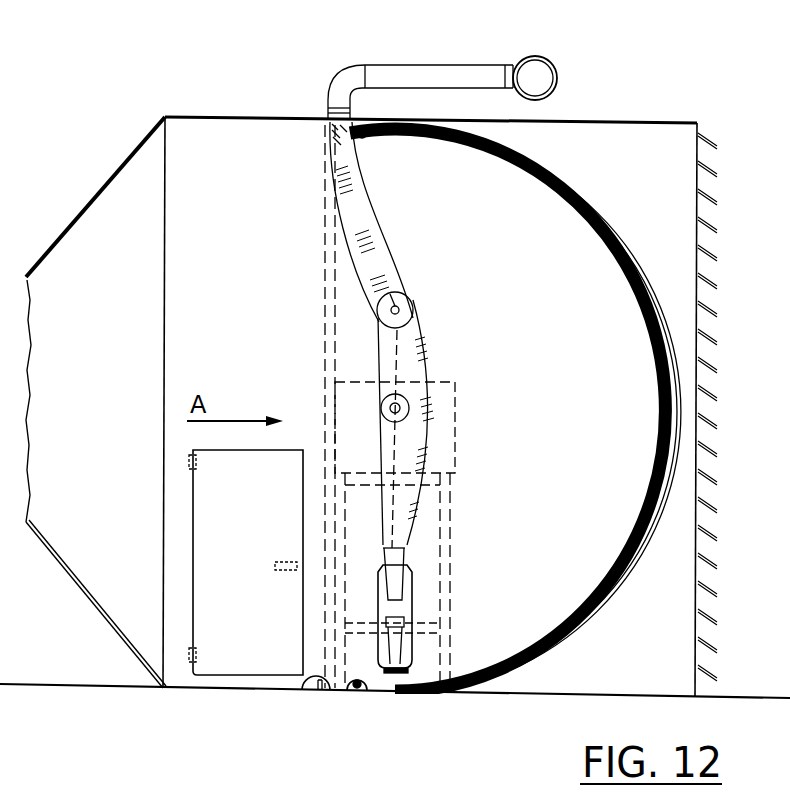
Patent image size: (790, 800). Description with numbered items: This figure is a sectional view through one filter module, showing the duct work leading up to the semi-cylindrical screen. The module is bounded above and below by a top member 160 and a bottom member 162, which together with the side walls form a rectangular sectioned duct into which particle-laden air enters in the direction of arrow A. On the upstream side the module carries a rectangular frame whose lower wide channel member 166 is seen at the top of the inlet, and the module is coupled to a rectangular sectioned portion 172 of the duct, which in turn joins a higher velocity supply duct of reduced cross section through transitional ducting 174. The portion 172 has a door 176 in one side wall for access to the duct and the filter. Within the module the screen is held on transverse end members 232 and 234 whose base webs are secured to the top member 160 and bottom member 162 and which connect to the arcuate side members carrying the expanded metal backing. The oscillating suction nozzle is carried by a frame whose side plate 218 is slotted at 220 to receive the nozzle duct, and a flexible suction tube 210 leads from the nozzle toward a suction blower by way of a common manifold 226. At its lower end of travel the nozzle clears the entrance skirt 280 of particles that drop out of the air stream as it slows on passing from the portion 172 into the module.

The top member 160 is at (630, 123).
The bottom member 162 is at (498, 703).
The lower wide channel member 166 is at (325, 122).
The rectangular sectioned portion 172 is at (262, 223).
The transitional ducting 174 is at (100, 618).
The door 176 is at (243, 667).
The flexible suction tube 210 is at (385, 268).
The side plate 218 is at (412, 585).
The slot 220 is at (400, 647).
The common manifold 226 is at (543, 62).
The end member 232 is at (362, 104).
The end member 234 is at (373, 704).
The entrance skirt 280 is at (300, 697).